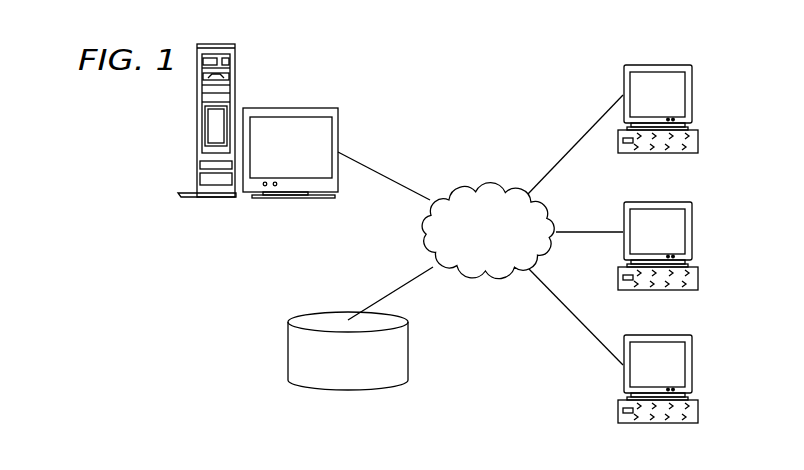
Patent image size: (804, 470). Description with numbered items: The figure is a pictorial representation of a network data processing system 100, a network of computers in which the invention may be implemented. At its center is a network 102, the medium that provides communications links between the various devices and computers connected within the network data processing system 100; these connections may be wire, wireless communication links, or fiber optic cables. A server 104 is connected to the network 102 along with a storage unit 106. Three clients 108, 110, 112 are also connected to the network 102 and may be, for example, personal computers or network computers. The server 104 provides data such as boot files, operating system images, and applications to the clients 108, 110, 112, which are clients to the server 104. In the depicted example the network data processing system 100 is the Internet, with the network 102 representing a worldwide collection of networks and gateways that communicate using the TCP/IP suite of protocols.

The network data processing system 100 is at (540, 69).
The network 102 is at (462, 183).
The server 104 is at (197, 120).
The storage unit 106 is at (333, 390).
The client 108 is at (692, 95).
The client 110 is at (692, 232).
The client 112 is at (692, 365).